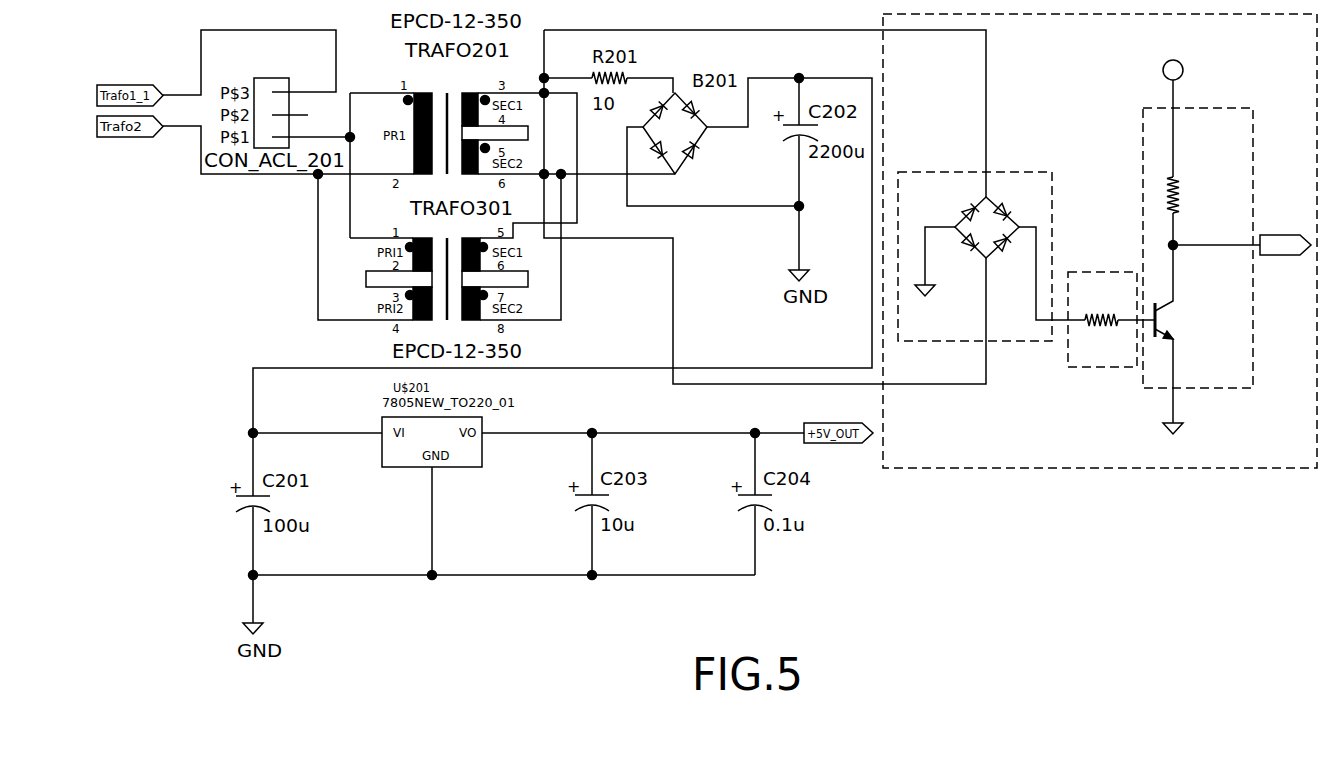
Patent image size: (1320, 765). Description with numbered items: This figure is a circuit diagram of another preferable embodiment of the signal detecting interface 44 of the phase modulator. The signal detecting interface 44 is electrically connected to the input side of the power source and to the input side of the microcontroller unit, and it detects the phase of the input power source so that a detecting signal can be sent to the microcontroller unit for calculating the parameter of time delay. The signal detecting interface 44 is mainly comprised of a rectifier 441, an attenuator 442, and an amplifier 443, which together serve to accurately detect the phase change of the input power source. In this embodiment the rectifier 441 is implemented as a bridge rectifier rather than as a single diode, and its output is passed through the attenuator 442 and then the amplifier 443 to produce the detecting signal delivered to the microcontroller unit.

The signal detecting interface 44 is at (1023, 468).
The rectifier 441 is at (961, 330).
The attenuator 442 is at (1087, 358).
The amplifier 443 is at (1228, 373).